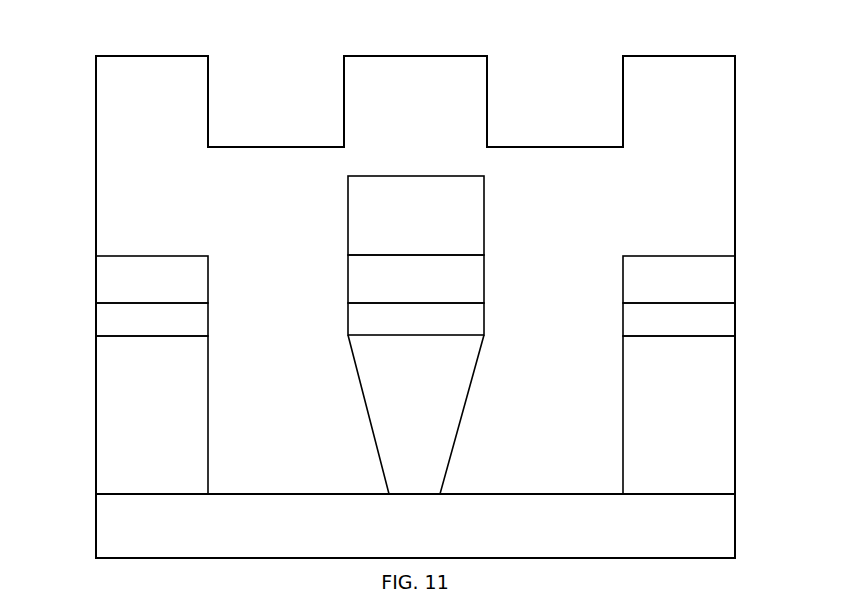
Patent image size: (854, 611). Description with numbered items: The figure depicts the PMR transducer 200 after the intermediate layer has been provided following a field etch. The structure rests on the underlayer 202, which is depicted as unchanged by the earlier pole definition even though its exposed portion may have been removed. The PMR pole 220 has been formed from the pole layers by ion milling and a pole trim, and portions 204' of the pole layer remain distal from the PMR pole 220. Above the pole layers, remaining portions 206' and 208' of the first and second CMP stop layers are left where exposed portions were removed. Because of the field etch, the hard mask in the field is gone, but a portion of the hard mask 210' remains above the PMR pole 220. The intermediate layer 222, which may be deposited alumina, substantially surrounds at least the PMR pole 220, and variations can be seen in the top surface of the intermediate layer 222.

The PMR transducer 200 is at (436, 34).
The underlayer 202 is at (736, 527).
The portions of the pole layer 204' is at (416, 415).
The remaining portions of the first CMP stop layer 206' is at (416, 213).
The remaining portions of the second CMP stop layer 208' is at (416, 181).
The remaining portion of the hard mask 210' is at (375, 173).
The PMR pole 220 is at (472, 383).
The intermediate layer 222 is at (96, 208).